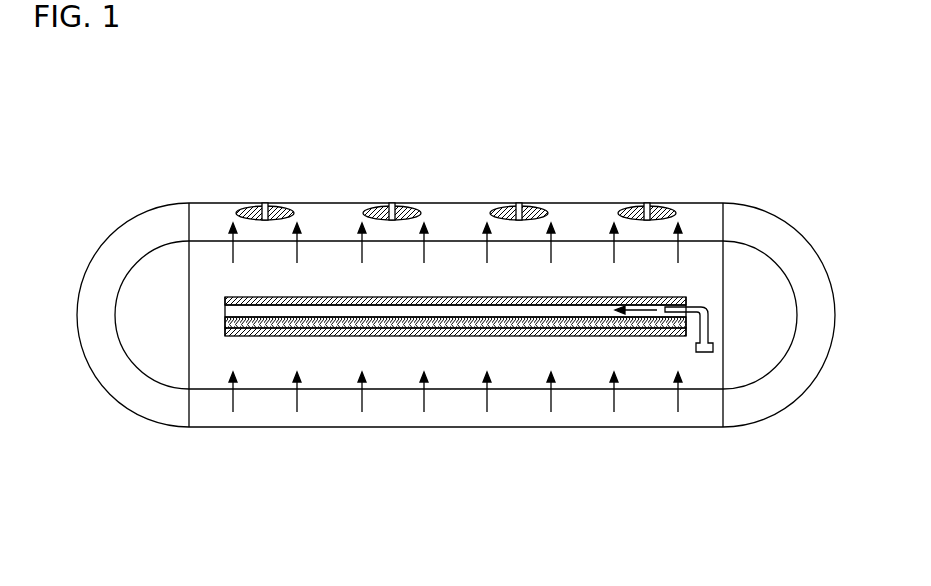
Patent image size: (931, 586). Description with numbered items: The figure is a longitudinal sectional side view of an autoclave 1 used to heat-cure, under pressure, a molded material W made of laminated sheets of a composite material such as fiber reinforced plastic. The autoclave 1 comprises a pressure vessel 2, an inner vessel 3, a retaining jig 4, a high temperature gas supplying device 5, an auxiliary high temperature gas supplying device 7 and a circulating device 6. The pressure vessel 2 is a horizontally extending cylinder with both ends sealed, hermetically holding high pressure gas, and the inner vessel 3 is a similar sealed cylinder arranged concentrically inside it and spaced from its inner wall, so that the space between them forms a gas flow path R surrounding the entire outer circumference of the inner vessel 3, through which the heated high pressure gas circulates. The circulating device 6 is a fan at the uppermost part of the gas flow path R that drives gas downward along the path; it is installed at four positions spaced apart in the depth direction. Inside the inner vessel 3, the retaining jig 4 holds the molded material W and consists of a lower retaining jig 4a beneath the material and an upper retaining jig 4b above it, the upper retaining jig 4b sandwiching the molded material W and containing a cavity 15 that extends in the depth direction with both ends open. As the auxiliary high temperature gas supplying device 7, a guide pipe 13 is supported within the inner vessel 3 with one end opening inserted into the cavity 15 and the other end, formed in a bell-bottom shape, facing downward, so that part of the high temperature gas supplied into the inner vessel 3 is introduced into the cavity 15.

The autoclave 1 is at (746, 118).
The pressure vessel 2 is at (205, 203).
The inner vessel 3 is at (178, 241).
The retaining jig 4 is at (363, 386).
The lower retaining jig 4a is at (225, 336).
The upper retaining jig 4b is at (225, 297).
The high temperature gas supplying device 5 is at (363, 400).
The circulating device 6 is at (280, 210).
The auxiliary high temperature gas supplying device 7 is at (632, 312).
The guide pipe 13 is at (710, 325).
The cavity 15 is at (507, 310).
The gas flow path R is at (454, 410).
The molded material W is at (642, 330).